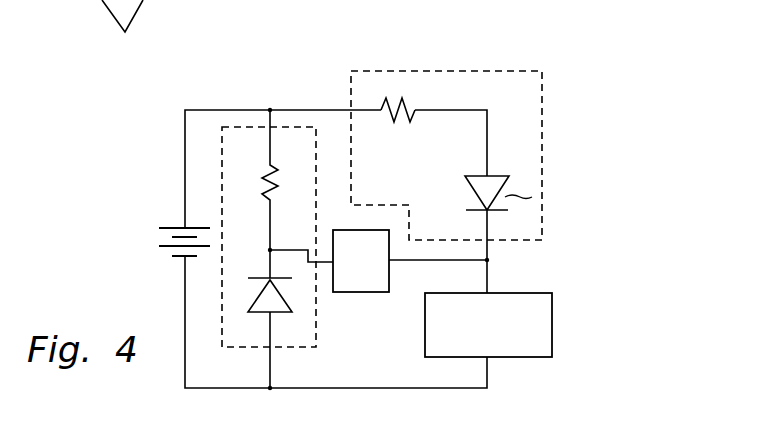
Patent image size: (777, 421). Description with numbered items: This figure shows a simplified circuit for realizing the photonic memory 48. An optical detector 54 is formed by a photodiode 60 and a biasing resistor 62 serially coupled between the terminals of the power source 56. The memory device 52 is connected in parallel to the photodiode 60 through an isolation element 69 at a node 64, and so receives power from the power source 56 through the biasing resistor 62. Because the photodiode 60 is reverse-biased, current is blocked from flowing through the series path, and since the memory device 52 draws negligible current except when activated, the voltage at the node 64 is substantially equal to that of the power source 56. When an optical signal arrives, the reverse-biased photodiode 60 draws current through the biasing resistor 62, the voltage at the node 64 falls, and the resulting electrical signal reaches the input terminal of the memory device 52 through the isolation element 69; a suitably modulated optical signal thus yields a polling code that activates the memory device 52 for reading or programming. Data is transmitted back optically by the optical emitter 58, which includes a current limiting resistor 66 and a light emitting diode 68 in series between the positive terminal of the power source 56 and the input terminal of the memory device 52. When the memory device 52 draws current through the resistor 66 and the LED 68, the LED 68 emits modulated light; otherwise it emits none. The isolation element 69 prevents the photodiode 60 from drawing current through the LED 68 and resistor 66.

The photonic memory 48 is at (565, 73).
The memory device 52 is at (552, 320).
The optical detector 54 is at (222, 143).
The power source 56 is at (172, 228).
The optical emitter 58 is at (456, 70).
The photodiode 60 is at (260, 312).
The biasing resistor 62 is at (268, 170).
The node 64 is at (270, 248).
The current limiting resistor 66 is at (383, 102).
The light emitting diode 68 is at (503, 176).
The isolation element 69 is at (370, 293).